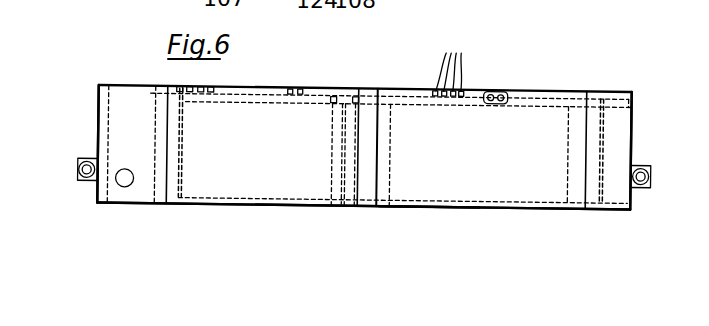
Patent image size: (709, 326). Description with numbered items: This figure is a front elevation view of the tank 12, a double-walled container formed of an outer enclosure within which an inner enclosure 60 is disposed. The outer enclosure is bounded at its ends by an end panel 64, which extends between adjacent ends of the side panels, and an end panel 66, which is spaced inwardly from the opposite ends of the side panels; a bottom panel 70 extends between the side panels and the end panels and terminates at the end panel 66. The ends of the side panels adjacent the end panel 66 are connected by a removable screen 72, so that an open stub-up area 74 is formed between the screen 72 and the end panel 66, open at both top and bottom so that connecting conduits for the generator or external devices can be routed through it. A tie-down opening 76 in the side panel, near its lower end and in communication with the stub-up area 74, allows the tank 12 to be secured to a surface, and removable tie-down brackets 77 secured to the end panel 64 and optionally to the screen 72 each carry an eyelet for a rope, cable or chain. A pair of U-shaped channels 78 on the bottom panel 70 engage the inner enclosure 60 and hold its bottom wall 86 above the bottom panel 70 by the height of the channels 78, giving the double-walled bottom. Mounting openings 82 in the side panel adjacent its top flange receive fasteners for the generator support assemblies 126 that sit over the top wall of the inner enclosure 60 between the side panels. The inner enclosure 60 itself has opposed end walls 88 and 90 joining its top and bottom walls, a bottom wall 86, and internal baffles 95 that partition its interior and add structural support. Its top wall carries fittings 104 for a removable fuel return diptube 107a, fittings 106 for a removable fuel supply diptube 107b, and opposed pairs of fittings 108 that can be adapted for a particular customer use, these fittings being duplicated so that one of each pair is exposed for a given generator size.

The tank 12 is at (350, 225).
The removable screen 72 is at (98, 100).
The stub-up area 74 is at (135, 117).
The tie-down bracket 77 is at (84, 160).
The tie-down opening 76 is at (125, 187).
The end panel 66 is at (155, 176).
The end wall 88 is at (176, 178).
The bottom wall 86 is at (548, 202).
The U-shaped channel 78 is at (242, 208).
The bottom panel 70 is at (453, 213).
The end wall 90 is at (603, 192).
The end panel 64 is at (634, 197).
The internal baffle 95 is at (341, 177).
The inner enclosure 60 is at (552, 100).
The generator support assembly 126 is at (493, 89).
The mounting opening 82 is at (452, 60).
The fitting 108 is at (240, 49).
The fitting 104 is at (334, 99).
The fitting 106 is at (356, 98).
The fuel return diptube 107a is at (353, 148).
The fuel supply diptube 107b is at (332, 178).